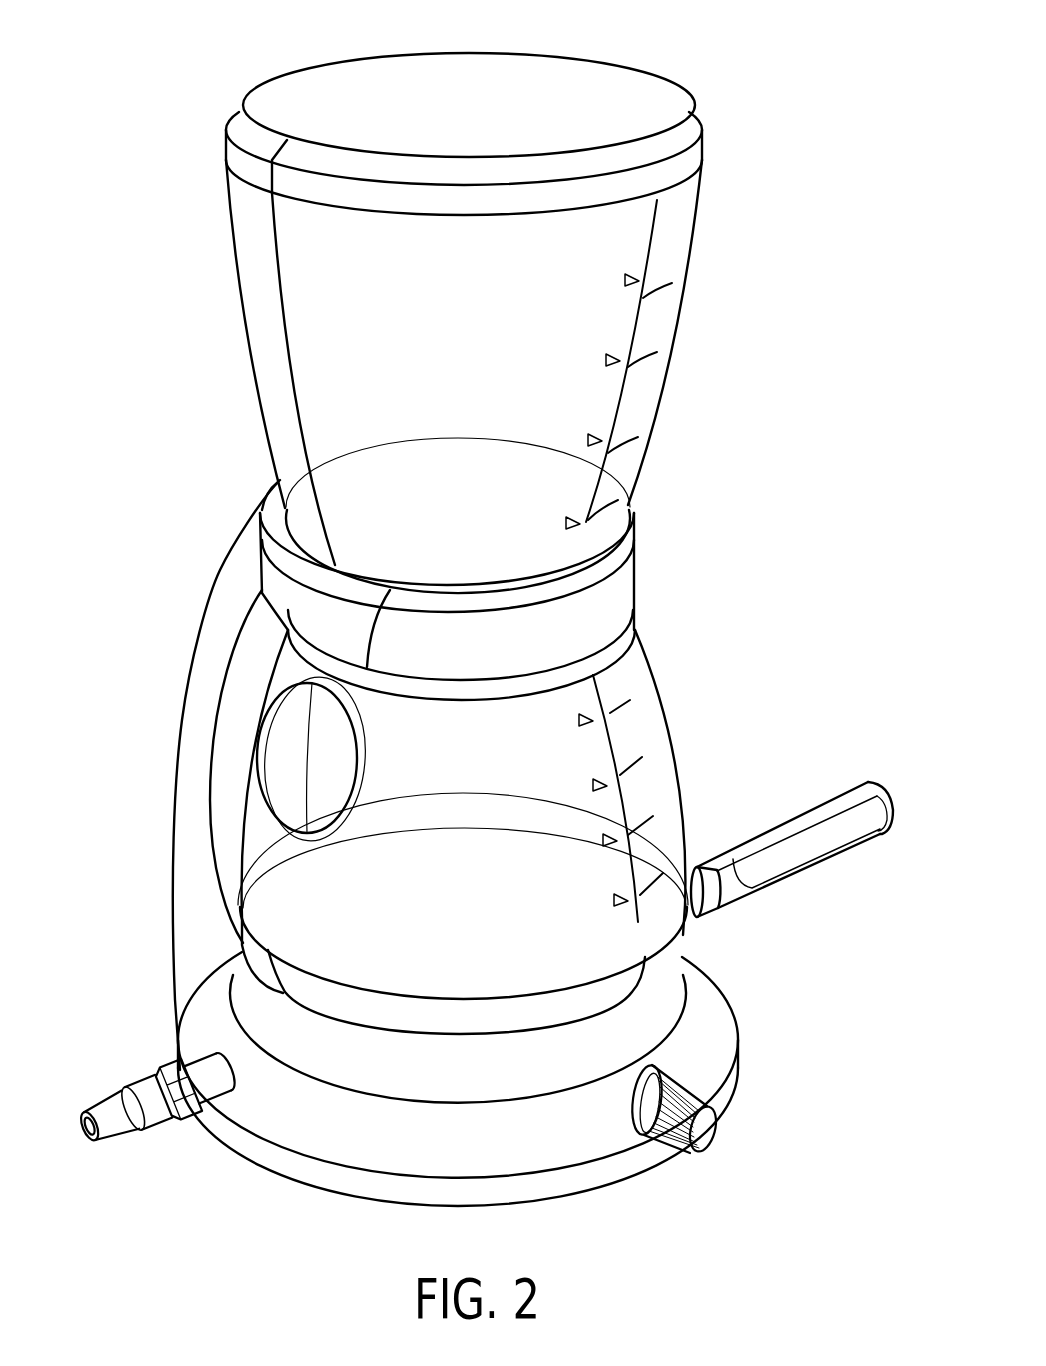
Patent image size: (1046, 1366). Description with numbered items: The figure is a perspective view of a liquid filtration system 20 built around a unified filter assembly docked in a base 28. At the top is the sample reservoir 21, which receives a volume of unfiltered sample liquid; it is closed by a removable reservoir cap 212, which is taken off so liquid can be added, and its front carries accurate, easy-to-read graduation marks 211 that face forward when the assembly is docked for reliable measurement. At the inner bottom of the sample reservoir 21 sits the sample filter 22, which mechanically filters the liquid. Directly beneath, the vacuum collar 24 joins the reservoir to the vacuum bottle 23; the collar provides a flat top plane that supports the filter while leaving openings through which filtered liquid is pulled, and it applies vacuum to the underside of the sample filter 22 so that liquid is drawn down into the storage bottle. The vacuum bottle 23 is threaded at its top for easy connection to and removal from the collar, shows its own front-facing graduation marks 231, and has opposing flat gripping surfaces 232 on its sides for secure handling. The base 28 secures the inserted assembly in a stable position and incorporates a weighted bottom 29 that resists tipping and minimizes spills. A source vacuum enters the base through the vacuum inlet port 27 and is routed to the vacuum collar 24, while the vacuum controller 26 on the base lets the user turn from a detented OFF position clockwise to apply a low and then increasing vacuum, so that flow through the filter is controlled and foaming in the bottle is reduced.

The liquid filtration system 20 is at (478, 605).
The sample reservoir 21 is at (486, 352).
The graduation marks 211 is at (632, 340).
The reservoir cap 212 is at (523, 65).
The sample filter 22 is at (428, 452).
The vacuum bottle 23 is at (565, 832).
The graduation marks 231 is at (620, 783).
The flat gripping surfaces 232 is at (347, 767).
The vacuum collar 24 is at (637, 567).
The vacuum controller 26 is at (704, 1148).
The vacuum inlet port 27 is at (125, 1092).
The base 28 is at (124, 969).
The weighted bottom 29 is at (725, 1007).